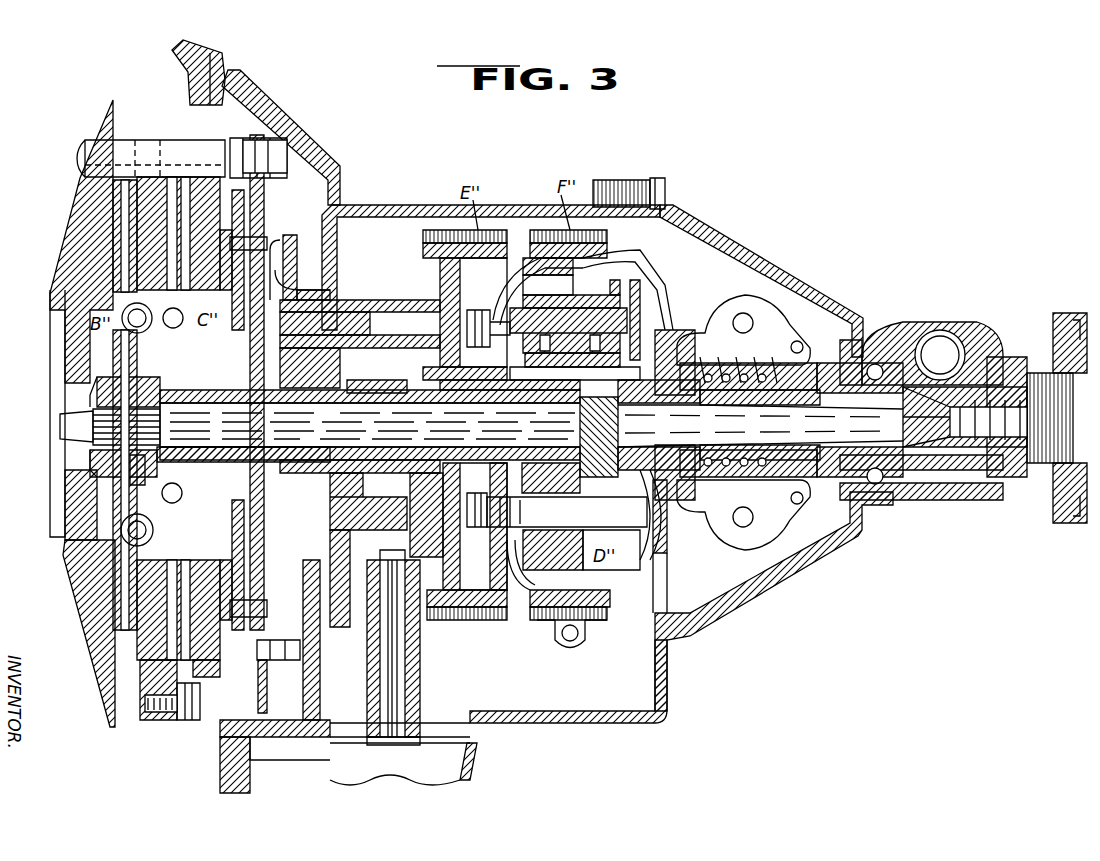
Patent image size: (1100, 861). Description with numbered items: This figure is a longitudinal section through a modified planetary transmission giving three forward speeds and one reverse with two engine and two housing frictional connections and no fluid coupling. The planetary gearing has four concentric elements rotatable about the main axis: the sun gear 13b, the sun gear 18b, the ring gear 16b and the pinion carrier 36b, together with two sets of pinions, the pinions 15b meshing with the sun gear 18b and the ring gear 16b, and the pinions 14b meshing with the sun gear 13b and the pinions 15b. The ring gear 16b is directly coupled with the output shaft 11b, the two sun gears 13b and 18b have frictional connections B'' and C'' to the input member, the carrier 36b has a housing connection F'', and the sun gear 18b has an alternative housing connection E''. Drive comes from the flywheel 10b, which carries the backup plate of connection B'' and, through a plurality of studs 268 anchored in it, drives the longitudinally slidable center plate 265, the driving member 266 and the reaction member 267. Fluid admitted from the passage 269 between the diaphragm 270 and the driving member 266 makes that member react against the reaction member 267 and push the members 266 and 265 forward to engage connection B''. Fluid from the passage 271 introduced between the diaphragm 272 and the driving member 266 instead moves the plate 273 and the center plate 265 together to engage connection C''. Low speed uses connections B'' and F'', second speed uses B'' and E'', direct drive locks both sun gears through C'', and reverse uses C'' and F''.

The flywheel 10b is at (60, 318).
The output shaft 11b is at (933, 440).
The sun gear 13b is at (593, 470).
The pinions 14b is at (620, 290).
The pinions 15b is at (540, 563).
The ring gear 16b is at (583, 275).
The sun gear 18b is at (545, 383).
The pinion carrier 36b is at (493, 313).
The center plate 265 is at (147, 230).
The driving member 266 is at (194, 183).
The reaction member 267 is at (267, 237).
The studs 268 is at (123, 160).
The passage 269 is at (297, 368).
The diaphragm 270 is at (289, 362).
The passage 271 is at (342, 477).
The diaphragm 272 is at (217, 452).
The plate 273 is at (210, 665).